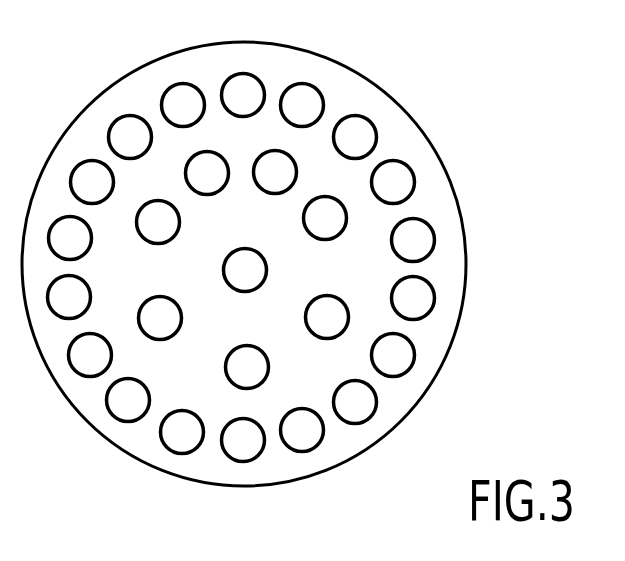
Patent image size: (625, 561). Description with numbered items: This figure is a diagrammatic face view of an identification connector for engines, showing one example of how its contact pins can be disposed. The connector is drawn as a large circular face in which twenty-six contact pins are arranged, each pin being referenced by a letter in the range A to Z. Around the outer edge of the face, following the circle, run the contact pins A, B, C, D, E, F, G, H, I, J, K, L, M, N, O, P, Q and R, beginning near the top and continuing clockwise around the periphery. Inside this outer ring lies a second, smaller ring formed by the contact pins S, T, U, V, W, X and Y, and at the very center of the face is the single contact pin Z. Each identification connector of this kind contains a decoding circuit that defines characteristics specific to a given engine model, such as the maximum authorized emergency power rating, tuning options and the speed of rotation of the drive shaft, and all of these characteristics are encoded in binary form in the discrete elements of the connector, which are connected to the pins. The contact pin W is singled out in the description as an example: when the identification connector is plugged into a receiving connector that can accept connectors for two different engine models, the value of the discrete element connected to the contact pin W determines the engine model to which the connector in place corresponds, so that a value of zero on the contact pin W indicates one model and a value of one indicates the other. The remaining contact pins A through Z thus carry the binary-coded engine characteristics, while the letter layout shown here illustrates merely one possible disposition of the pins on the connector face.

The contact pin A is at (247, 85).
The contact pin B is at (310, 99).
The contact pin C is at (363, 136).
The contact pin D is at (405, 182).
The contact pin E is at (424, 240).
The contact pin F is at (421, 308).
The contact pin G is at (396, 368).
The contact pin H is at (355, 417).
The contact pin I is at (302, 445).
The contact pin J is at (240, 454).
The contact pin K is at (172, 438).
The contact pin L is at (120, 402).
The contact pin M is at (78, 355).
The contact pin N is at (58, 294).
The contact pin O is at (63, 228).
The contact pin P is at (92, 170).
The contact pin Q is at (130, 124).
The contact pin R is at (183, 92).
The contact pin S is at (198, 168).
The contact pin T is at (285, 166).
The contact pin U is at (336, 218).
The contact pin V is at (338, 318).
The contact pin W is at (247, 383).
The contact pin X is at (152, 327).
The contact pin Y is at (148, 222).
The contact pin Z is at (245, 256).